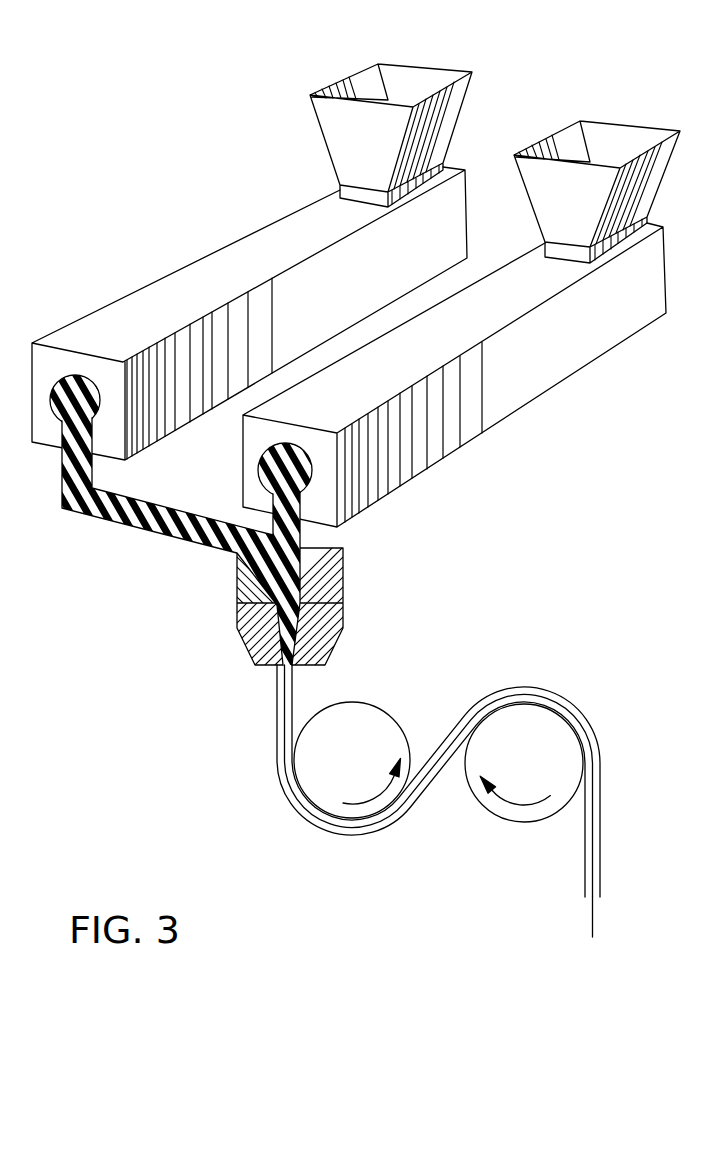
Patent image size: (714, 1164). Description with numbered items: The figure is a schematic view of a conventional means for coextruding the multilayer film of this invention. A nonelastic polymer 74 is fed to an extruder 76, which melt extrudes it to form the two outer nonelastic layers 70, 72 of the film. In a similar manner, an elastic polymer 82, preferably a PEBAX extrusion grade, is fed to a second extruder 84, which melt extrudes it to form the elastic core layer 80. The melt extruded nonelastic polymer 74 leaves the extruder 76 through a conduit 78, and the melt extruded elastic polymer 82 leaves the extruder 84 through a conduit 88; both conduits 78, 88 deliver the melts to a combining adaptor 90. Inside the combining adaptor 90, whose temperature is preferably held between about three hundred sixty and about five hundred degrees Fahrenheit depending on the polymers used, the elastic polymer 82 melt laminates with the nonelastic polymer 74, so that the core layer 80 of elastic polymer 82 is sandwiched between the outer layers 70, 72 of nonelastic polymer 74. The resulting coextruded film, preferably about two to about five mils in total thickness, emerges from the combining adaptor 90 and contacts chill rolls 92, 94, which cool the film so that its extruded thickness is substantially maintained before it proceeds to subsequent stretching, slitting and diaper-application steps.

The outer nonelastic layer 70 is at (600, 840).
The outer nonelastic layer 72 is at (585, 848).
The nonelastic polymer 74 is at (402, 73).
The extruder 76 is at (168, 302).
The conduit 78 is at (62, 488).
The elastic core layer 80 is at (597, 922).
The elastic polymer 82 is at (608, 132).
The extruder 84 is at (556, 362).
The conduit 88 is at (353, 527).
The combining adaptor 90 is at (247, 640).
The chill roll 92 is at (358, 703).
The chill roll 94 is at (478, 803).